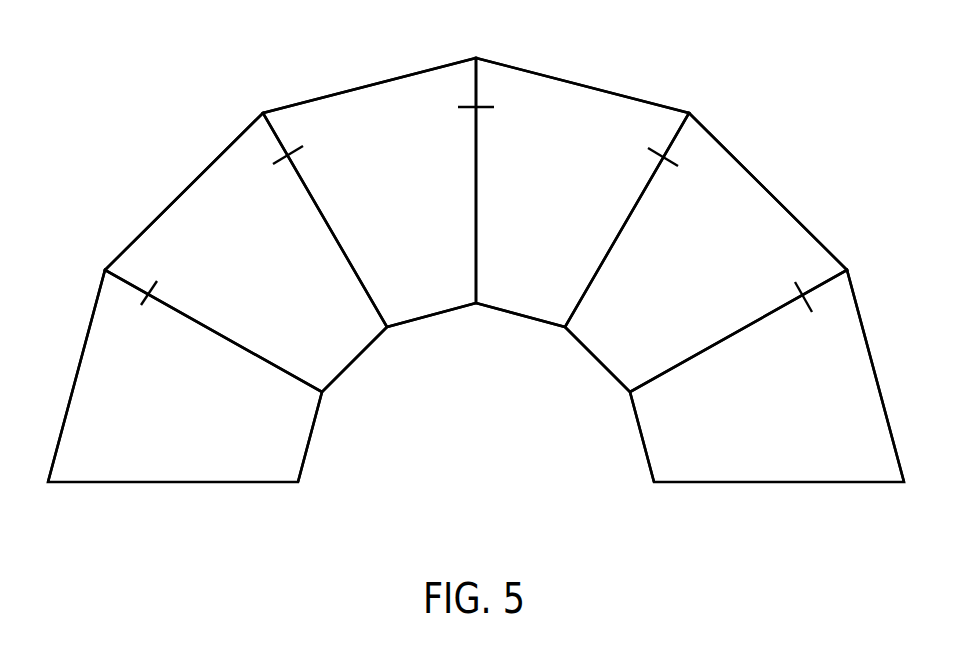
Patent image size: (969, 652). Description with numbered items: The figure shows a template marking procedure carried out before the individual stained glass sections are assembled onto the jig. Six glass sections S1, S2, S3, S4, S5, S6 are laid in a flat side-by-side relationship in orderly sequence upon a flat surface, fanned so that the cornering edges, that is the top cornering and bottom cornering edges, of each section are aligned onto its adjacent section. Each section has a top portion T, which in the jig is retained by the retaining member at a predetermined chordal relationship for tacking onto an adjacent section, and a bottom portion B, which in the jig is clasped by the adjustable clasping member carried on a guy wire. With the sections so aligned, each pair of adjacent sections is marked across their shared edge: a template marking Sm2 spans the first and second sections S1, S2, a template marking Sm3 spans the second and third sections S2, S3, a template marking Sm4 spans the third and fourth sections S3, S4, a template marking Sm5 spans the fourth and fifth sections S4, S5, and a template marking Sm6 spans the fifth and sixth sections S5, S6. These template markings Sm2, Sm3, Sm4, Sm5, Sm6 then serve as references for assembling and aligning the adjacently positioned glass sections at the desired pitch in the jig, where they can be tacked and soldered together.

The glass section S1 is at (185, 376).
The glass section S2 is at (246, 252).
The glass section S3 is at (369, 192).
The glass section S4 is at (582, 192).
The glass section S5 is at (706, 252).
The glass section S6 is at (767, 376).
The template marking Sm2 is at (143, 293).
The template marking Sm3 is at (288, 150).
The template marking Sm4 is at (481, 104).
The template marking Sm5 is at (668, 155).
The template marking Sm6 is at (812, 298).
The bottom portion B is at (76, 372).
The top portion T is at (314, 437).